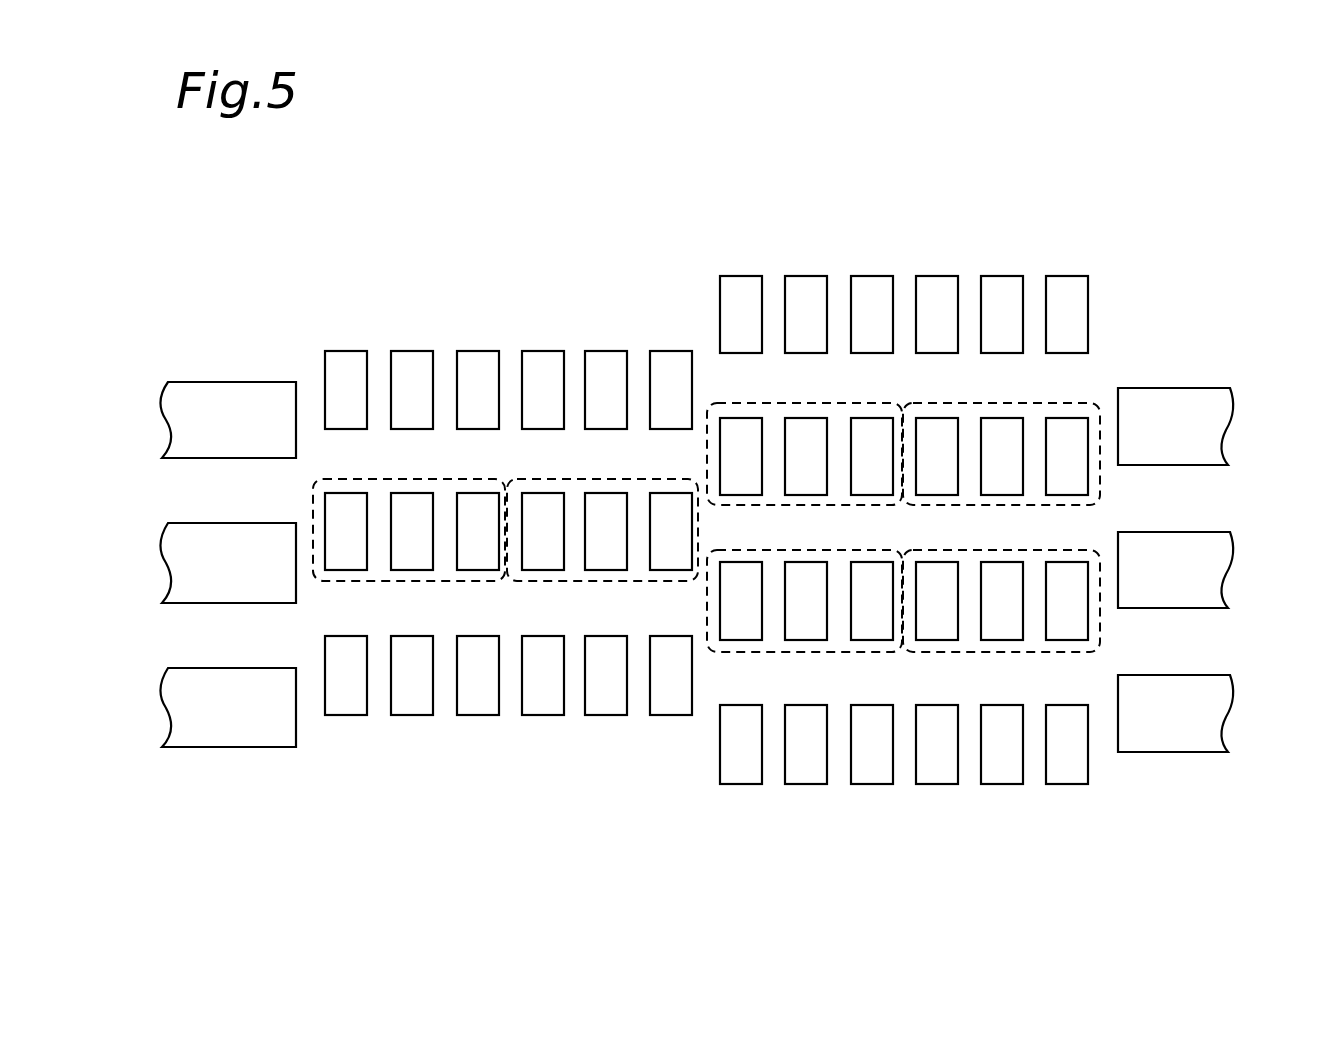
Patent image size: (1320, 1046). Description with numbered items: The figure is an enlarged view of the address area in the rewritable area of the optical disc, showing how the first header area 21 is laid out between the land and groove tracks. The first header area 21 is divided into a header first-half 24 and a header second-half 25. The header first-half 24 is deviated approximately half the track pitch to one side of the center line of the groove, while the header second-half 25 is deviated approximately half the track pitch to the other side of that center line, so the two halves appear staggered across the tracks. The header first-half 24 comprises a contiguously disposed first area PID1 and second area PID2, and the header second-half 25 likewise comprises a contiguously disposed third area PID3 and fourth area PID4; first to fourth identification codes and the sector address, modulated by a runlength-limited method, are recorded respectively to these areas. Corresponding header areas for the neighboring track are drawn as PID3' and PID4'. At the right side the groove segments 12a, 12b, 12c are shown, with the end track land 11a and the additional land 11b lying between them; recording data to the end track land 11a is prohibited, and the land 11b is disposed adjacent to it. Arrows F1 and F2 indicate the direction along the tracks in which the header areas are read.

The first header area 21 is at (805, 224).
The header first-half 24 is at (505, 471).
The header second-half 25 is at (1009, 539).
The first area PID1 is at (380, 480).
The second area PID2 is at (602, 432).
The third area PID3 is at (804, 700).
The fourth area PID4 is at (1001, 700).
The picture identifier group 3 prime PID3' is at (804, 363).
The picture identifier group 4 prime PID4' is at (1001, 363).
The output buffer a 12a is at (1212, 712).
The output buffer b 12b is at (1212, 572).
The output buffer c 12c is at (1212, 430).
The end track land 11a is at (1009, 700).
The additional land 11b is at (1009, 370).
The flow direction 1 F1 is at (286, 564).
The flow direction 2 F2 is at (286, 492).